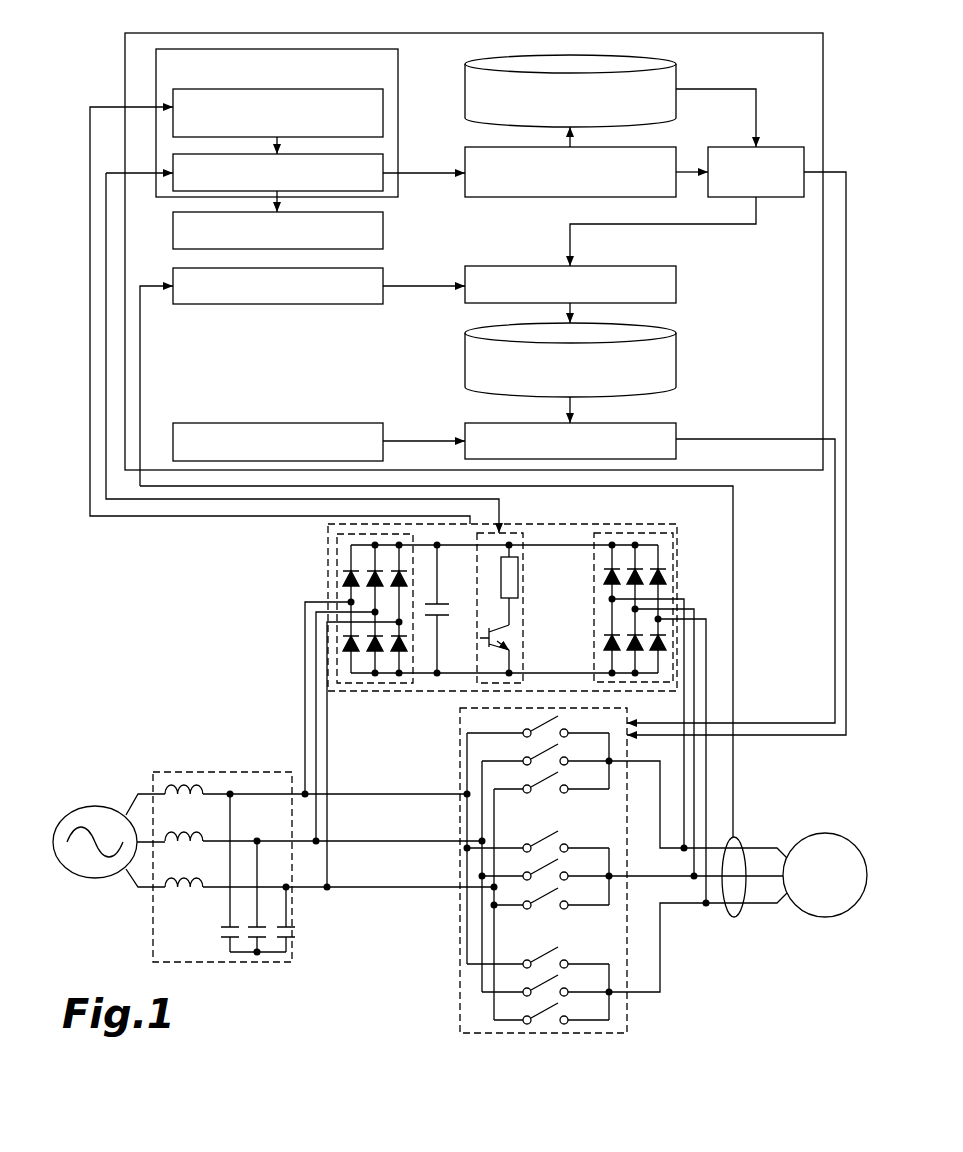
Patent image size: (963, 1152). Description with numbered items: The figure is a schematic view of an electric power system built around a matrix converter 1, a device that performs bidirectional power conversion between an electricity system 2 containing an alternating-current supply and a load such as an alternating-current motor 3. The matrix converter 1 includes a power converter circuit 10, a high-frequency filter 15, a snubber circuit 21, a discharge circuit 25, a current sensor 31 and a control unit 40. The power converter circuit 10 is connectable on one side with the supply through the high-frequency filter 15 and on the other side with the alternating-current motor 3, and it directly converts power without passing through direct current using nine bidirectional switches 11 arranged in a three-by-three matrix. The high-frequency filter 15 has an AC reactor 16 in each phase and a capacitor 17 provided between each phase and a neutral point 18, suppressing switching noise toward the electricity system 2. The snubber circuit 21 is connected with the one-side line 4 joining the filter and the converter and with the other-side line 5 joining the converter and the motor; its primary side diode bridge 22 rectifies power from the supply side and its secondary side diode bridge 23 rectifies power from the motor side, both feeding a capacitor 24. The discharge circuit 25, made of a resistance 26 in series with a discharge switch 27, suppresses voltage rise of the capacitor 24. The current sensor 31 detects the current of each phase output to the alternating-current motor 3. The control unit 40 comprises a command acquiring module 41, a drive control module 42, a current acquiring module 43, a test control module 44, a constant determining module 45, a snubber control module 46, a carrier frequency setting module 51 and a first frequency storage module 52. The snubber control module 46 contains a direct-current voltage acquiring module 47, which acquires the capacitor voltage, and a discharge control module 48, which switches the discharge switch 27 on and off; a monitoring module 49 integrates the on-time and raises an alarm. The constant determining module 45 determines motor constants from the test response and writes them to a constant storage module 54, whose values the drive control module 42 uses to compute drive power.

The matrix converter 1 is at (108, 66).
The electricity system 2 is at (93, 806).
The alternating-current motor 3 is at (822, 834).
The one-side line 4 is at (410, 887).
The other-side line 5 is at (670, 903).
The power converter circuit 10 is at (460, 727).
The bidirectional switches 11 is at (540, 1010).
The high-frequency filter 15 is at (153, 943).
The AC reactor 16 is at (190, 875).
The capacitor 17 is at (291, 922).
The neutral point 18 is at (257, 957).
The snubber circuit 21 is at (328, 543).
The primary side diode bridge 22 is at (337, 571).
The secondary side diode bridge 23 is at (678, 550).
The capacitor 24 is at (432, 601).
The discharge circuit 25 is at (523, 600).
The resistance 26 is at (518, 577).
The discharge switch 27 is at (498, 637).
The current sensor 31 is at (740, 840).
The control unit 40 is at (823, 50).
The command acquiring module 41 is at (200, 423).
The drive control module 42 is at (676, 423).
The current acquiring module 43 is at (383, 276).
The test control module 44 is at (786, 197).
The constant determining module 45 is at (676, 283).
The snubber control module 46 is at (398, 77).
The direct-current voltage acquiring module 47 is at (383, 107).
The discharge control module 48 is at (383, 162).
The monitoring module 49 is at (383, 232).
The carrier frequency setting module 51 is at (676, 146).
The first frequency storage module 52 is at (676, 74).
The constant storage module 54 is at (676, 358).